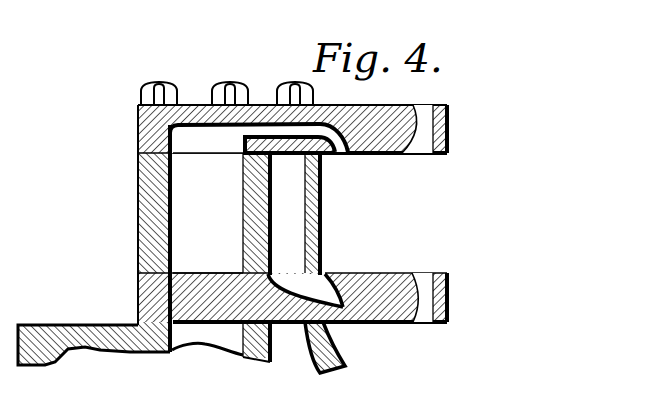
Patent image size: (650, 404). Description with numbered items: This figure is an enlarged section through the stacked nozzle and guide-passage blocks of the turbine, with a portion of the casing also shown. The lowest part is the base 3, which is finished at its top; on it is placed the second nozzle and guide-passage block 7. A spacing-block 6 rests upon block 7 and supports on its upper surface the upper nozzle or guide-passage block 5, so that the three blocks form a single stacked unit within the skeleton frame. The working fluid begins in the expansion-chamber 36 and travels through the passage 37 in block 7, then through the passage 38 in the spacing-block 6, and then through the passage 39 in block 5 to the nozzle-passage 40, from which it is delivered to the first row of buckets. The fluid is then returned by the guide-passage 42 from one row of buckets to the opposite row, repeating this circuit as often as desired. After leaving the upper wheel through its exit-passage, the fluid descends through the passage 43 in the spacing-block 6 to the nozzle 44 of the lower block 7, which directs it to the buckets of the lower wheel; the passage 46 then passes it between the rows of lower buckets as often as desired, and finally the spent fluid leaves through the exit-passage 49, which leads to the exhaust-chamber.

The base 3 is at (97, 352).
The nozzle or guide-passage block 5 is at (138, 127).
The spacing-block 6 is at (138, 192).
The second nozzle and guide-passage block 7 is at (138, 287).
The expansion-chamber 36 is at (219, 338).
The passage 37 is at (208, 291).
The passage 38 is at (208, 186).
The passage 39 is at (258, 130).
The nozzle-passage 40 is at (340, 153).
The guide-passage 42 is at (426, 153).
The passage 43 is at (281, 257).
The nozzle 44 is at (331, 302).
The passage 46 is at (427, 308).
The exit-passage 49 is at (297, 347).